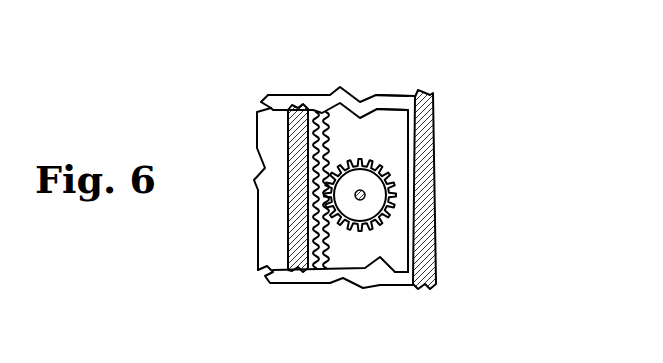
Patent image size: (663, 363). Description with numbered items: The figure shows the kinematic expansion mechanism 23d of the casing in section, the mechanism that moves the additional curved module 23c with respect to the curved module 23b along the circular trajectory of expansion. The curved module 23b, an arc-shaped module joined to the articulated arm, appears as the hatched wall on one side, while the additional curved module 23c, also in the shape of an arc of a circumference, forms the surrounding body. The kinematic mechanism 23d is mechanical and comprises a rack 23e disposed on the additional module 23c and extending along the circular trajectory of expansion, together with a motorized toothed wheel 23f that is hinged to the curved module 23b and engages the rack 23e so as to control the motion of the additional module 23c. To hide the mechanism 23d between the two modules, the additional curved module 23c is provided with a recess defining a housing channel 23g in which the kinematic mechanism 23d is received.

The curved module 23b is at (437, 263).
The additional curved module 23c is at (256, 128).
The kinematic expansion mechanism 23d is at (380, 242).
The rack 23e is at (352, 250).
The motorized toothed wheel 23f is at (366, 193).
The housing channel 23g is at (375, 104).